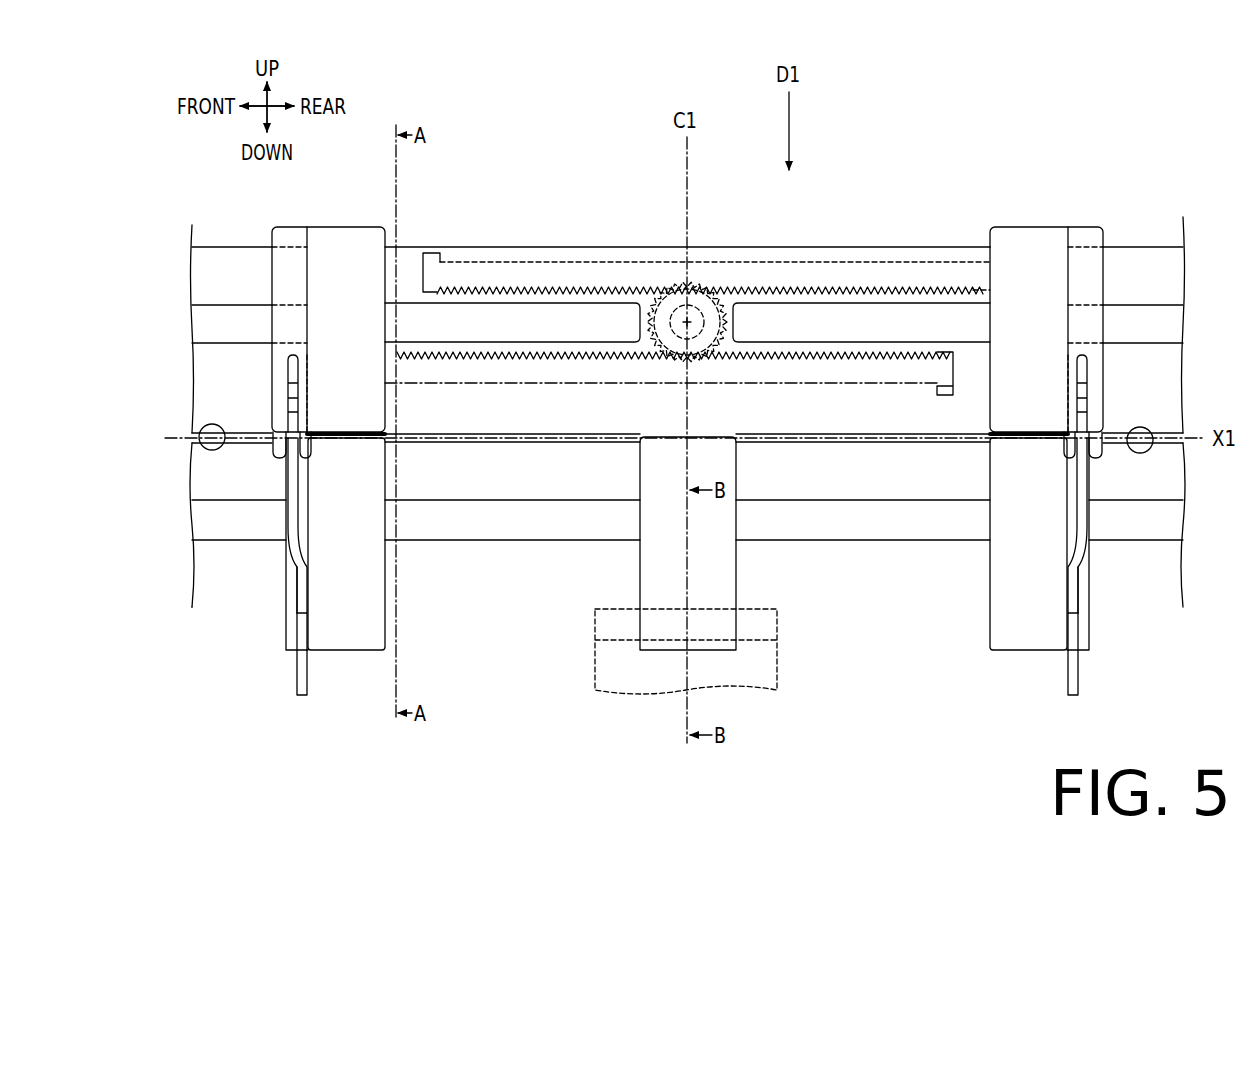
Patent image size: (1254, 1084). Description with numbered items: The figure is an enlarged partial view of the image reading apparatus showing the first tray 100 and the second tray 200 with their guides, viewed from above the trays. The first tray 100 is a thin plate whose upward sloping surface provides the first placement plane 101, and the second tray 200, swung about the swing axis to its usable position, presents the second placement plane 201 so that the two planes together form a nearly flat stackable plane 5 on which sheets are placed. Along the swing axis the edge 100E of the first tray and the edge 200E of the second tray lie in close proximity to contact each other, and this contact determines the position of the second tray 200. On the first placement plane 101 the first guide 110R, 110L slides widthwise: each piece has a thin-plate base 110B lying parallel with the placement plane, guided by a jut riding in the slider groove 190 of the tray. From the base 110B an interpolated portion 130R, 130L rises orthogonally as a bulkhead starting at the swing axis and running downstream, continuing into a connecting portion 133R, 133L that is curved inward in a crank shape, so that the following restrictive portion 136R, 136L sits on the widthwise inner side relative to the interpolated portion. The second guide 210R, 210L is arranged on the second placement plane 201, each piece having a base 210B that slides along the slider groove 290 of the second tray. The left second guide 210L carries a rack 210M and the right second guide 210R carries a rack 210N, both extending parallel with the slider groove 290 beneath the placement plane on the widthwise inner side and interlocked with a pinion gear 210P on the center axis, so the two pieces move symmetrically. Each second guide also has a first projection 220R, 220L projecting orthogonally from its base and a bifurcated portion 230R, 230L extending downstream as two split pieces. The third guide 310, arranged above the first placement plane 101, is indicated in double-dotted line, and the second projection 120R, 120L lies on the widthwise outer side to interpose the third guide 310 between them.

The stackable plane 5 is at (898, 581).
The first tray 100 is at (1186, 569).
The edge of the first tray 100E is at (1142, 455).
The first placement plane 101 is at (835, 629).
The first guide (left piece) 110L is at (343, 654).
The first guide (right piece) 110R is at (1035, 654).
The base 110B is at (325, 554).
The second projection (left piece) 120L is at (300, 677).
The second projection (right piece) 120R is at (1081, 677).
The interpolated portion (left) 130L is at (294, 423).
The interpolated portion (right) 130R is at (1089, 425).
The connecting portion (left) 133L is at (298, 556).
The connecting portion (right) 133R is at (1080, 556).
The restrictive portion (left) 136L is at (302, 604).
The restrictive portion (right) 136R is at (1080, 604).
The slider groove 190 is at (490, 538).
The second tray 200 is at (1186, 263).
The edge of the second tray 200E is at (212, 424).
The second placement plane 201 is at (830, 419).
The second guide (left piece) 210L is at (345, 223).
The second guide (right piece) 210R is at (1033, 223).
The base 210B is at (325, 329).
The rack 210M is at (585, 377).
The rack 210N is at (825, 262).
The pinion gear 210P is at (701, 304).
The first projection (left piece) 220L is at (290, 265).
The first projection (right piece) 220R is at (1088, 262).
The bifurcated portion (left) 230L is at (305, 407).
The bifurcated portion (right) 230R is at (1072, 407).
The slider groove 290 is at (563, 341).
The third guide 310 is at (770, 678).